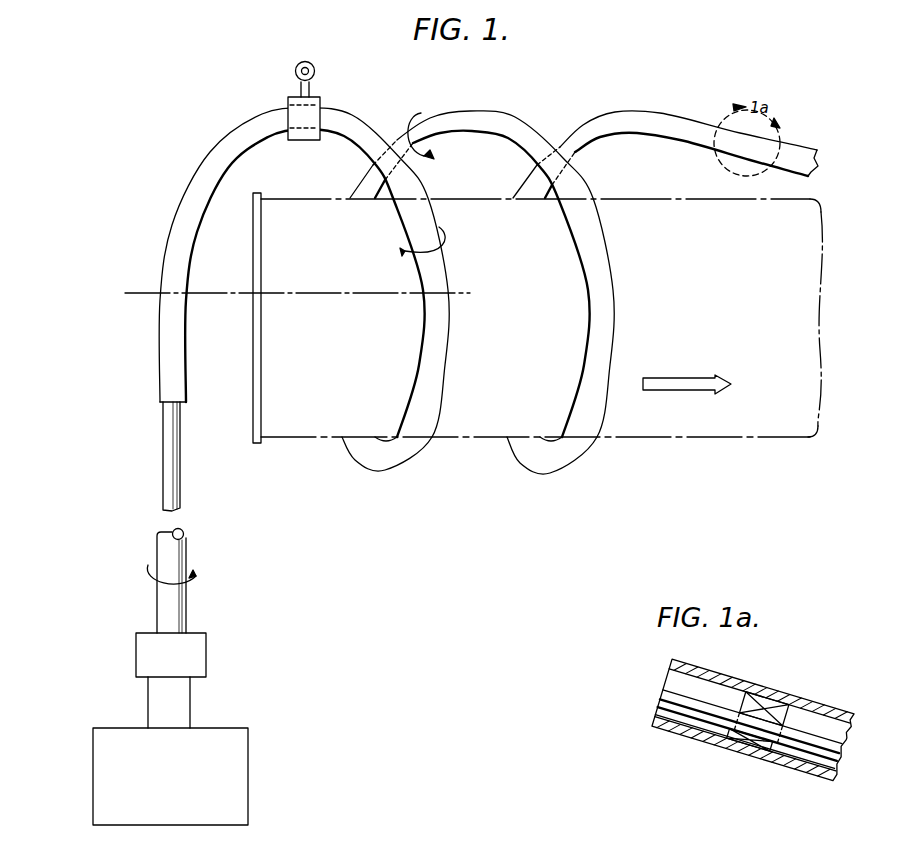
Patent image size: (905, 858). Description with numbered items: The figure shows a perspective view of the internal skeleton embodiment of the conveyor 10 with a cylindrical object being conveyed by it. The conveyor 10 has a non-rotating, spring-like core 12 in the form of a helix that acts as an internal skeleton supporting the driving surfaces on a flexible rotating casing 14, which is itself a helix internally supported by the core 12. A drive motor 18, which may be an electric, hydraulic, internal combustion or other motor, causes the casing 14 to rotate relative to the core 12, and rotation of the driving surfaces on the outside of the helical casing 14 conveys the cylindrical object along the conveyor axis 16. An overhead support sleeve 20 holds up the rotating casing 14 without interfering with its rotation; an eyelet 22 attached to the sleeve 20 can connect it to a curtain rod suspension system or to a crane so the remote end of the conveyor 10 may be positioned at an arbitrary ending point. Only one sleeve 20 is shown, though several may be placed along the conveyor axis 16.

The conveyor 10 is at (458, 500).
The spring-like core 12 is at (178, 487).
The flexible rotating casing 14 is at (160, 378).
The conveyor axis 16 is at (147, 293).
The drive motor 18 is at (183, 808).
The overhead support sleeve 20 is at (308, 130).
The eyelet 22 is at (316, 73).